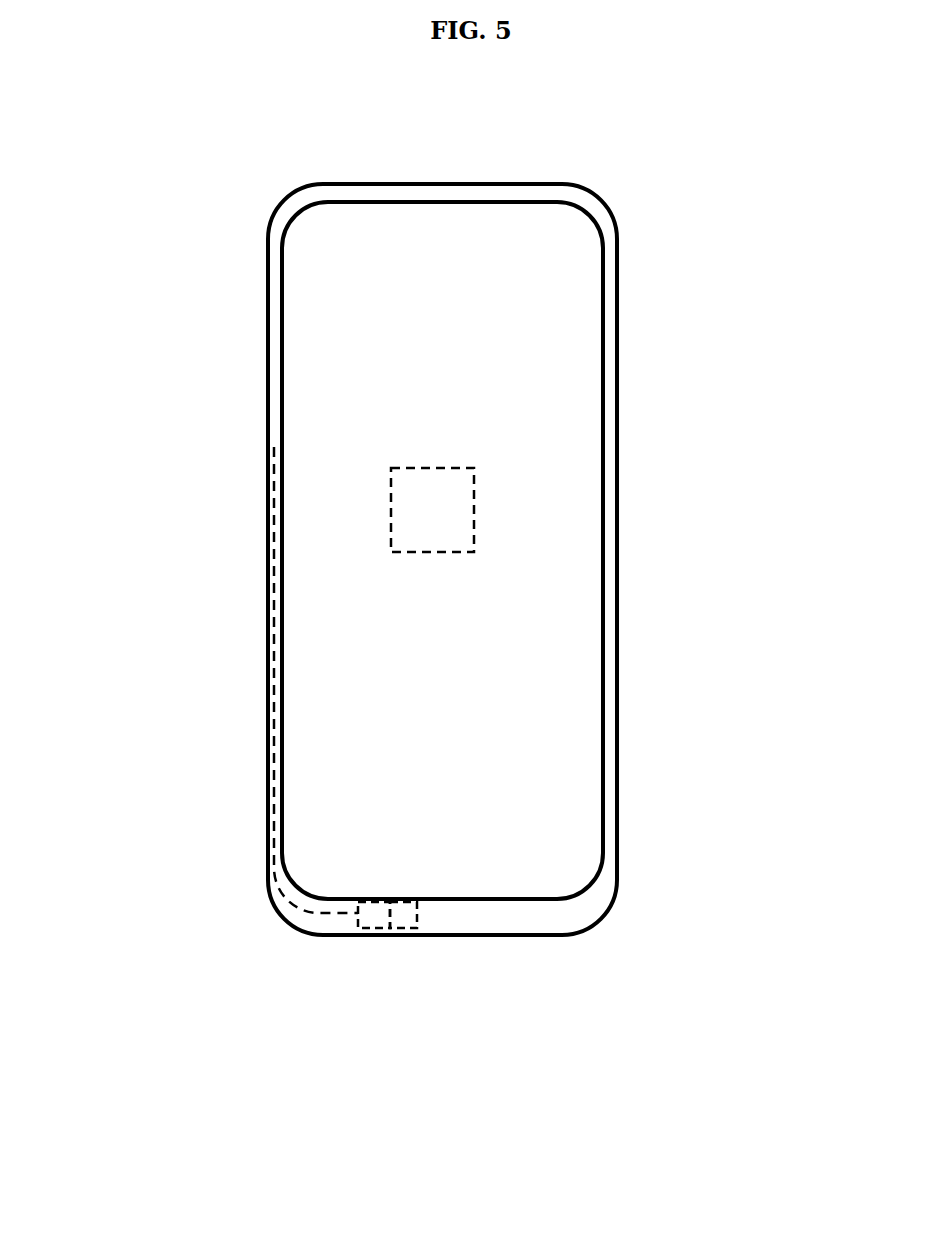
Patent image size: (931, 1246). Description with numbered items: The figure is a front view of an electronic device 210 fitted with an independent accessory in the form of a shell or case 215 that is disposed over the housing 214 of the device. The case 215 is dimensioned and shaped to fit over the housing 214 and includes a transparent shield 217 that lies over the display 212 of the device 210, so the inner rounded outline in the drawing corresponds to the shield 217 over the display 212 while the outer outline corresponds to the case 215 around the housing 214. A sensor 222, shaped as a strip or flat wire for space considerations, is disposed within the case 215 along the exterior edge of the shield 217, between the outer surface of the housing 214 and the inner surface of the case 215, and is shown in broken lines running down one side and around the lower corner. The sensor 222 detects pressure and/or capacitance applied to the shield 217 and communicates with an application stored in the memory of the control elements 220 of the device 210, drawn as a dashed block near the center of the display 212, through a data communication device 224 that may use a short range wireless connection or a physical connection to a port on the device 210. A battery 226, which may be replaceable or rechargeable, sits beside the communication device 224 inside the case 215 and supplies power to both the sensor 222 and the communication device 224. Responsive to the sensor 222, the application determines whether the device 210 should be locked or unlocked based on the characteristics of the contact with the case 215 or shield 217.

The electronic device 210 is at (678, 211).
The display 212 is at (328, 320).
The housing 214 is at (622, 785).
The case 215 is at (608, 681).
The shield 217 is at (608, 444).
The control elements 220 is at (474, 517).
The sensor 222 is at (274, 515).
The communication device 224 is at (367, 932).
The battery 226 is at (402, 930).